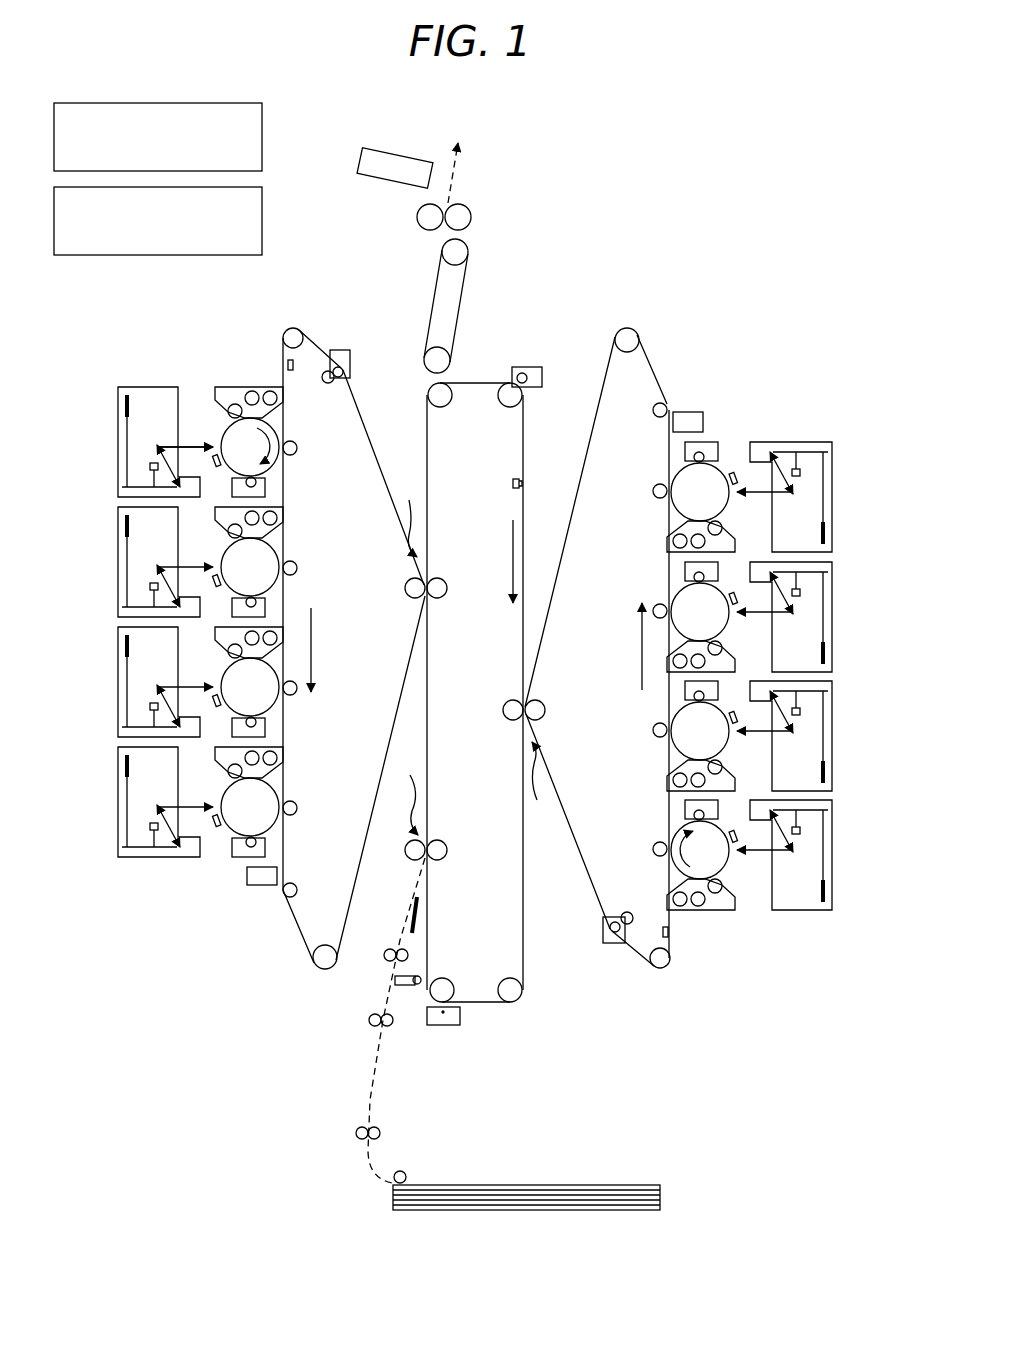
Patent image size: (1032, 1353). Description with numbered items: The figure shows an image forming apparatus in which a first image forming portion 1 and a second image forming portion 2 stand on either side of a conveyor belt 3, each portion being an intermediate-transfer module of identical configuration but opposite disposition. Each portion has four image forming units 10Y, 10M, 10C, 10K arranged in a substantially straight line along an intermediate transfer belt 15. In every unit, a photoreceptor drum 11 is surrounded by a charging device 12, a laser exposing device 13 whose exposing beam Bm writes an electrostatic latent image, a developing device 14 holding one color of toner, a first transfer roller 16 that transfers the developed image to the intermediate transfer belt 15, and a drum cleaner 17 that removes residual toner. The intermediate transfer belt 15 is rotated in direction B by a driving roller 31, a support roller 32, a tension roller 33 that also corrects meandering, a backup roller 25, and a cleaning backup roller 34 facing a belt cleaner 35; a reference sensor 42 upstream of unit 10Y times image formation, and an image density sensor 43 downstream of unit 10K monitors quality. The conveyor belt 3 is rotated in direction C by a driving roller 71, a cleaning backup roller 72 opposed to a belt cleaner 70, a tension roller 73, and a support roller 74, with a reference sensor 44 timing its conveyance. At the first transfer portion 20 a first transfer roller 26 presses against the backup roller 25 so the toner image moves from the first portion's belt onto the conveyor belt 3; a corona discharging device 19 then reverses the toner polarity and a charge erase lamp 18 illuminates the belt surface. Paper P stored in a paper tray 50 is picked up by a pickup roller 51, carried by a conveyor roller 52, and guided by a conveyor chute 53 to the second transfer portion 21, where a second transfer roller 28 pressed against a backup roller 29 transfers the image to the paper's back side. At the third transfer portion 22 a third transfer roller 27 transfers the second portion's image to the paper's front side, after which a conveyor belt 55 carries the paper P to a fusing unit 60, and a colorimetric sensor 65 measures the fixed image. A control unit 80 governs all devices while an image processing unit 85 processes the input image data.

The first image forming portion 1 is at (722, 659).
The second image forming portion 2 is at (227, 636).
The conveyor belt 3 is at (497, 692).
The yellow image forming unit 10Y is at (189, 437).
The magenta image forming unit 10M is at (112, 563).
The cyan image forming unit 10C is at (112, 683).
The black image forming unit 10K is at (112, 803).
The photoreceptor drum 11 is at (227, 423).
The charging device 12 is at (215, 468).
The laser exposing device 13 is at (140, 386).
The developing device 14 is at (232, 387).
The intermediate transfer belt 15 is at (396, 702).
The first transfer roller 16 is at (297, 448).
The drum cleaner 17 is at (263, 490).
The charge erase lamp 18 is at (410, 990).
The corona discharging device 19 is at (440, 1025).
The first transfer portion 20 is at (546, 789).
The second transfer portion 21 is at (408, 790).
The third transfer portion 22 is at (410, 515).
The backup roller 25 is at (409, 576).
The first transfer roller 26 is at (505, 704).
The third transfer roller 27 is at (447, 592).
The second transfer roller 28 is at (447, 855).
The backup roller 29 is at (408, 855).
The driving roller 31 is at (293, 328).
The support roller 32 is at (296, 884).
The tension roller 33 is at (323, 945).
The cleaning backup roller 34 is at (326, 383).
The belt cleaner 35 is at (348, 350).
The reference sensor 42 is at (340, 366).
The image density sensor 43 is at (255, 885).
The reference sensor 44 is at (512, 487).
The paper tray 50 is at (660, 1195).
The pickup roller 51 is at (405, 1172).
The conveyor roller 52 is at (383, 959).
The conveyor chute 53 is at (410, 925).
The conveyor belt 55 is at (455, 323).
The fusing unit 60 is at (455, 200).
The colorimetric sensor 65 is at (393, 154).
The belt cleaner 70 is at (542, 375).
The driving roller 71 is at (440, 408).
The cleaning backup roller 72 is at (510, 408).
The tension roller 73 is at (507, 977).
The support roller 74 is at (444, 977).
The control unit 80 is at (262, 218).
The image processing unit 85 is at (262, 133).
The rotation direction of intermediate transfer belt B is at (321, 650).
The rotation direction of conveyor belt C is at (502, 561).
The exposing beam Bm is at (207, 445).
The paper P is at (527, 1182).